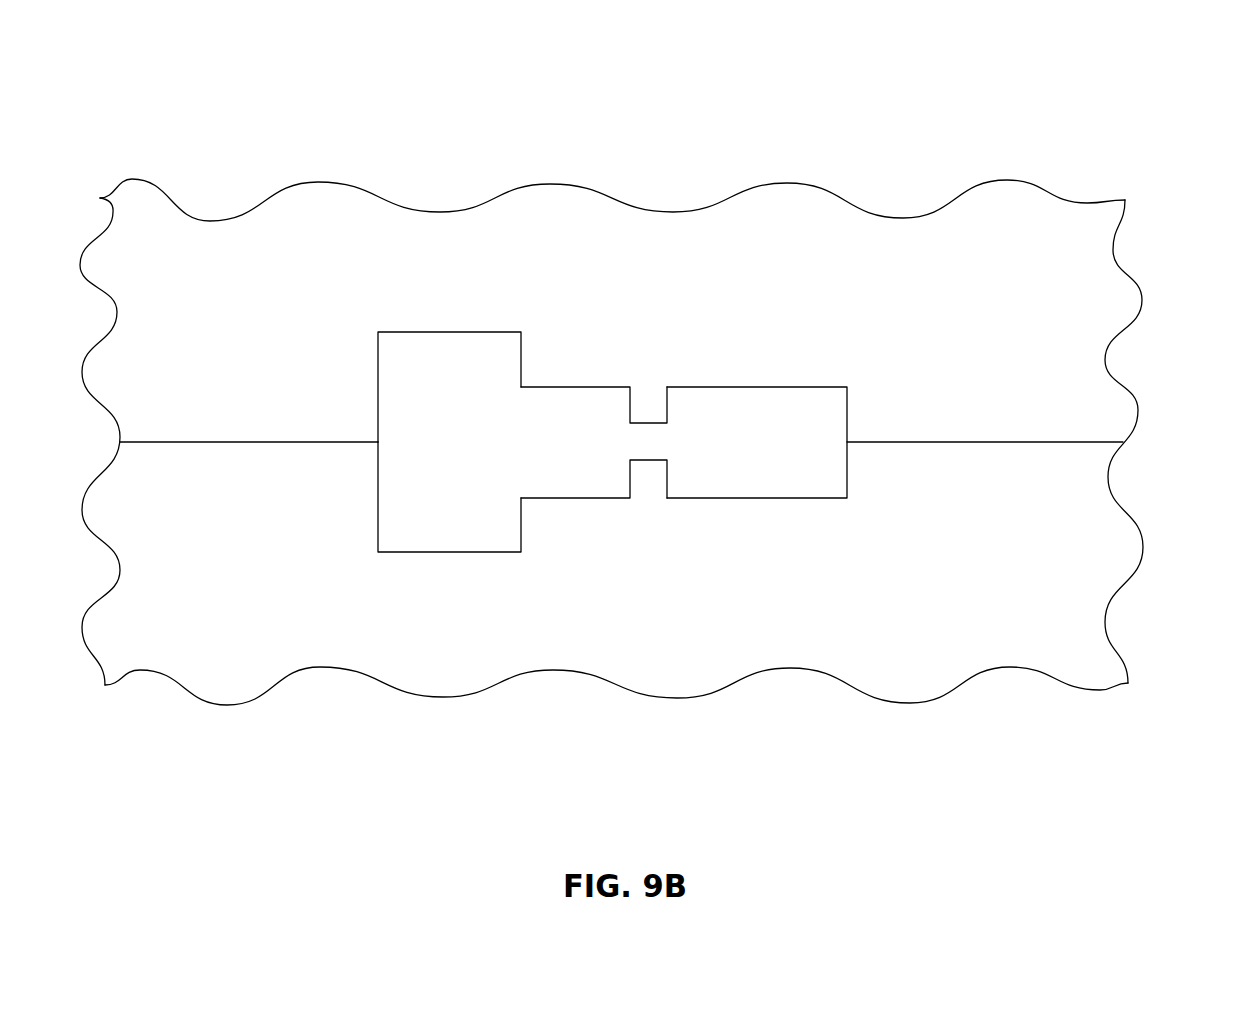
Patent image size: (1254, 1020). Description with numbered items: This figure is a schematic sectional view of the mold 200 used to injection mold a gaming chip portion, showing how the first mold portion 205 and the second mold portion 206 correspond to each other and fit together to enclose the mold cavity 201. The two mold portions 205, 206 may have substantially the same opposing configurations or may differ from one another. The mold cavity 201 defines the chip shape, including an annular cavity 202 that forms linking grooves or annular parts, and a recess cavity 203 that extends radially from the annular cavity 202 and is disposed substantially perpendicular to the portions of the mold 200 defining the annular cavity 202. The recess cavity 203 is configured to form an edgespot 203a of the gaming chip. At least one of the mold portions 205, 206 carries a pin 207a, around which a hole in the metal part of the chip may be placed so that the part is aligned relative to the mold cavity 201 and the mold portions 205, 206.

The mold 200 is at (903, 127).
The mold cavity 201 is at (415, 482).
The annular cavity 202 is at (812, 418).
The recess cavity 203 is at (450, 388).
The edgespot 203a is at (450, 525).
The first mold portion 205 is at (1012, 255).
The second mold portion 206 is at (1063, 570).
The pin 207a is at (650, 405).